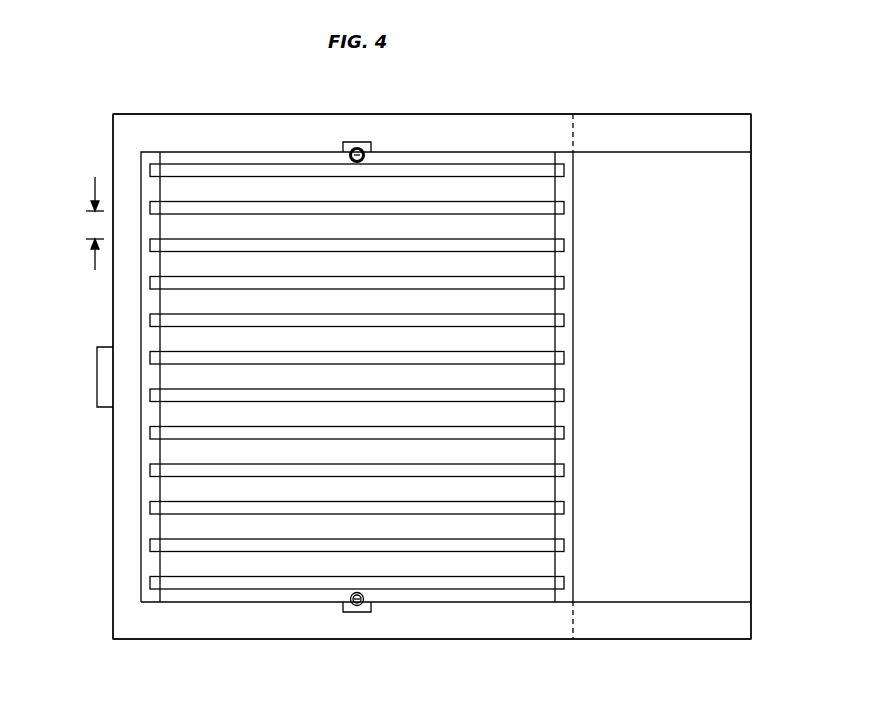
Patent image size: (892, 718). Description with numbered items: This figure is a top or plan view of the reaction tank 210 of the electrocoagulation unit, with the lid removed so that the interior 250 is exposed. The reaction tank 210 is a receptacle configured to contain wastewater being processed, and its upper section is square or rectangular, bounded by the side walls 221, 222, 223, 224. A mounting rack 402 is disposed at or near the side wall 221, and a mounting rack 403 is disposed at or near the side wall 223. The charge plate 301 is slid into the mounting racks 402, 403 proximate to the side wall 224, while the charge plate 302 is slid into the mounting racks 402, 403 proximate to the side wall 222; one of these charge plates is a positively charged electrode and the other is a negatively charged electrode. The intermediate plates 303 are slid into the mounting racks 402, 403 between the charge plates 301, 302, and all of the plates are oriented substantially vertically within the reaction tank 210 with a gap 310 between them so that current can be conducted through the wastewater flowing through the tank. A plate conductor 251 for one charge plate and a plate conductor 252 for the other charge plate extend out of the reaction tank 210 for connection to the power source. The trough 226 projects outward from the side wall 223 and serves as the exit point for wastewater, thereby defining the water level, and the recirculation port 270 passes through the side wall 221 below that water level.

The reaction tank 210 is at (695, 54).
The side wall 221 is at (113, 440).
The side wall 222 is at (214, 639).
The side wall 223 is at (573, 624).
The side wall 224 is at (186, 113).
The trough 226 is at (627, 113).
The interior 250 is at (522, 262).
The plate conductor 251 is at (372, 150).
The plate conductor 252 is at (372, 600).
The recirculation port 270 is at (97, 380).
The charge plate 301 is at (150, 170).
The charge plate 302 is at (150, 582).
The intermediate plates 303 is at (150, 358).
The gap 310 is at (86, 212).
The mounting rack 402 is at (150, 488).
The mounting rack 403 is at (563, 453).